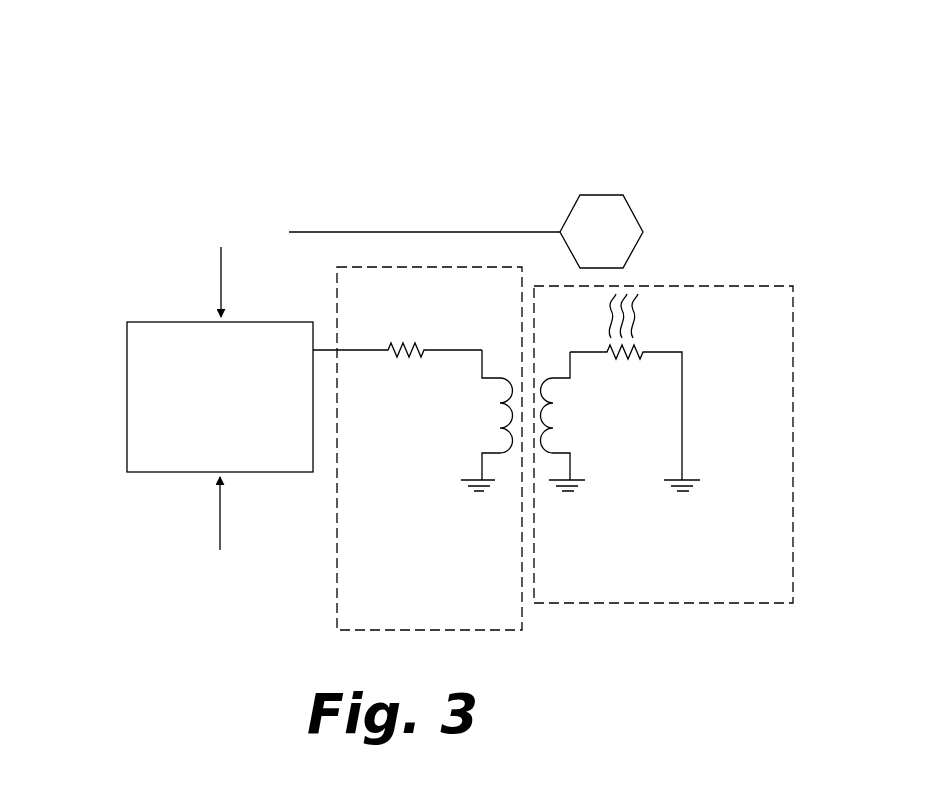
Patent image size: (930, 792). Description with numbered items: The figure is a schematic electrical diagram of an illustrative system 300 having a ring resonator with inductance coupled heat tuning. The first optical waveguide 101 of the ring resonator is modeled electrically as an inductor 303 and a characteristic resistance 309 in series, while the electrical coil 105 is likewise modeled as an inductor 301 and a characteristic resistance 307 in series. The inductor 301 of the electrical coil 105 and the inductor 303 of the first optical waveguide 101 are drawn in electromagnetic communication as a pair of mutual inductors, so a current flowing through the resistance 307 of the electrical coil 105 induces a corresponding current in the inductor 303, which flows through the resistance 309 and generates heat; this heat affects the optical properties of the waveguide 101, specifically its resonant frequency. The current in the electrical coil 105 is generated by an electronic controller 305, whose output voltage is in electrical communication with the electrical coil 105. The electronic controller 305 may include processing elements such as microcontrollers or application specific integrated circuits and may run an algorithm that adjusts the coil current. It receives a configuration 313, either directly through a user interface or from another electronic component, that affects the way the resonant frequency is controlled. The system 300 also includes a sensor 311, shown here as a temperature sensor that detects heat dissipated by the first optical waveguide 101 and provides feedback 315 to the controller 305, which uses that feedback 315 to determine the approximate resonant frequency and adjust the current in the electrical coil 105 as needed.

The system 300 is at (105, 116).
The electronic controller 305 is at (220, 397).
The feedback 315 is at (242, 212).
The configuration 313 is at (181, 591).
The sensor 311 is at (617, 210).
The electrical coil 105 is at (429, 448).
The first optical waveguide 101 is at (663, 444).
The characteristic resistance 307 is at (409, 327).
The inductor 301 is at (477, 423).
The inductor 303 is at (565, 423).
The characteristic resistance 309 is at (634, 367).